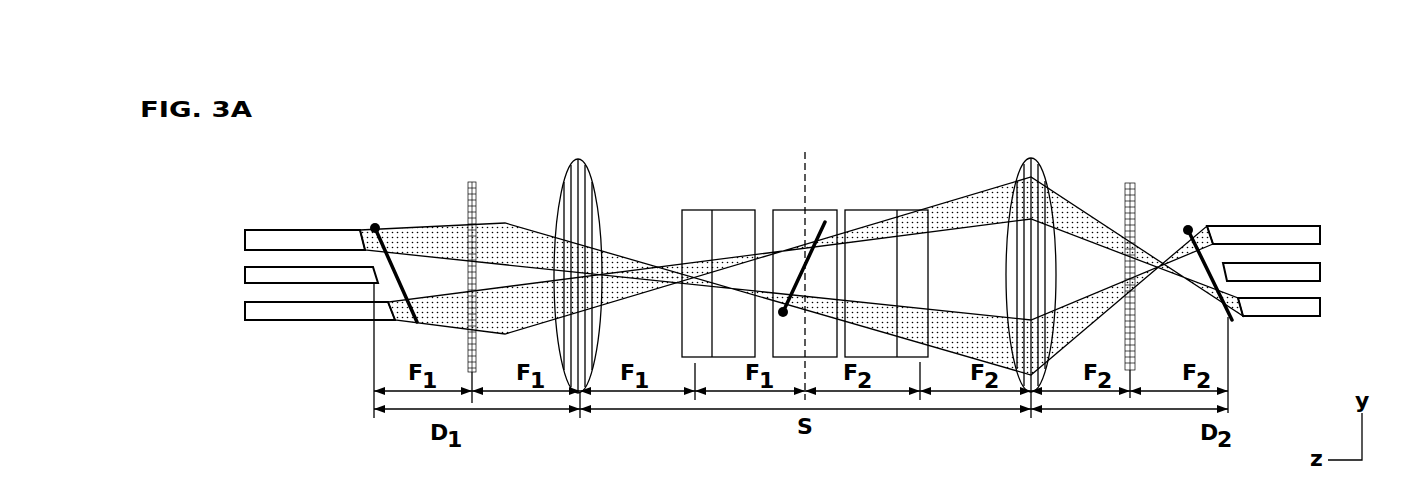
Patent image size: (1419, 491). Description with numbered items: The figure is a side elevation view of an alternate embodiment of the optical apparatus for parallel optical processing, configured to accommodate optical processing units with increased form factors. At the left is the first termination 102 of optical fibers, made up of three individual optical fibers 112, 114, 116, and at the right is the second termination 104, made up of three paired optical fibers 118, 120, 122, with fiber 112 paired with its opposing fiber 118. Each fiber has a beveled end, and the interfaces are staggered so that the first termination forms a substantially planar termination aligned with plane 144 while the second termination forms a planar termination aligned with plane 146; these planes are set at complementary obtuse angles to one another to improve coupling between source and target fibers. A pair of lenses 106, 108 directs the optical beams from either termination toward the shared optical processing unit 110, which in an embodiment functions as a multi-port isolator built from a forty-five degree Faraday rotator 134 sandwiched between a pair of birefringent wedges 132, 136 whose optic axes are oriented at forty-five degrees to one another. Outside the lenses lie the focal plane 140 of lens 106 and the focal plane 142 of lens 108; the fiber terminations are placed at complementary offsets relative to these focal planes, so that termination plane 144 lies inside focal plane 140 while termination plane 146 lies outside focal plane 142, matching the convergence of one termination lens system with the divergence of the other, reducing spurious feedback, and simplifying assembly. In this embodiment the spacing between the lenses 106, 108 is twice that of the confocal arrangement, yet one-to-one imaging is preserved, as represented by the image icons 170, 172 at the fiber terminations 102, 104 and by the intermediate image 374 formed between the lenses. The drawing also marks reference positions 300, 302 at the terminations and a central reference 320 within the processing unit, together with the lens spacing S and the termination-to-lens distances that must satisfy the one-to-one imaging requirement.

The first termination 102 is at (295, 257).
The second termination 104 is at (1300, 235).
The lens 106 is at (573, 162).
The lens 108 is at (1032, 158).
The optical processing unit 110 is at (806, 233).
The optical fiber 112 is at (277, 312).
The optical fiber 114 is at (274, 279).
The optical fiber 116 is at (277, 240).
The optical fiber 118 is at (1300, 307).
The optical fiber 120 is at (1297, 274).
The optical fiber 122 is at (1297, 230).
The birefringent wedge 132 is at (712, 210).
The Faraday rotator 134 is at (826, 210).
The birefringent wedge 136 is at (898, 210).
The focal plane 140 is at (471, 184).
The focal plane 142 is at (1128, 184).
The termination plane 144 is at (356, 218).
The termination plane 146 is at (1189, 192).
The image icon 170 is at (377, 228).
The image icon 172 is at (1186, 229).
The optical system / first reference plane 300 is at (373, 376).
The second reference plane 302 is at (1228, 378).
The center plane 320 is at (807, 154).
The intermediate image 374 is at (799, 278).